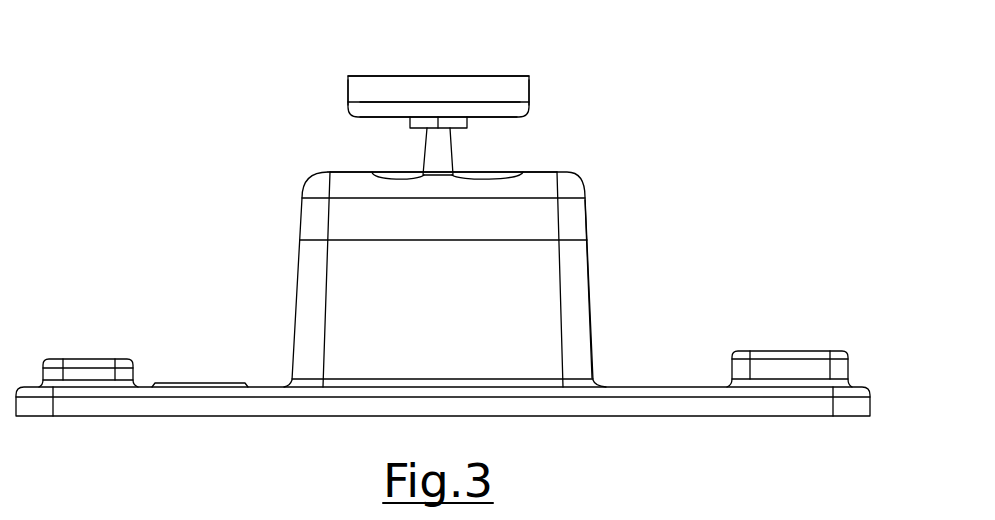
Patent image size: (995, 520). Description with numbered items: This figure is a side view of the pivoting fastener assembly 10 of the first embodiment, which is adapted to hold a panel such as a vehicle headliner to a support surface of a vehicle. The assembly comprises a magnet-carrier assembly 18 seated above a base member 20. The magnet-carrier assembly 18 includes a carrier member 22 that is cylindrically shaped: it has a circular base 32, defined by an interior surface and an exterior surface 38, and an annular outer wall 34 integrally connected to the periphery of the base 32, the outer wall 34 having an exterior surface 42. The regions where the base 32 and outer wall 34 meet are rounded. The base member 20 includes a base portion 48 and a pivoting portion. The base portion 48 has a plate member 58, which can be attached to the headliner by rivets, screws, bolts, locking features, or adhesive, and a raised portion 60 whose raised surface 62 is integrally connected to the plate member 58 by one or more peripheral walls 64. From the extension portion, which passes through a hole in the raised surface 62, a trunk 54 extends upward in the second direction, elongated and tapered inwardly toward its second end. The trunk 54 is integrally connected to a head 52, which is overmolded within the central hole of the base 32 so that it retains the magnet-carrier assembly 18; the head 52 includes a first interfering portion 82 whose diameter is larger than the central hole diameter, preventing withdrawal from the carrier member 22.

The pivoting fastener assembly 10 is at (732, 54).
The magnet-carrier assembly 18 is at (531, 72).
The base member 20 is at (715, 120).
The carrier member 22 is at (418, 85).
The base 32 is at (531, 110).
The outer wall 34 is at (348, 93).
The exterior surface 38 is at (376, 119).
The exterior surface 42 is at (348, 78).
The base portion 48 is at (660, 195).
The head 52 is at (470, 132).
The trunk 54 is at (452, 151).
The plate member 58 is at (630, 387).
The raised portion 60 is at (573, 171).
The raised surface 62 is at (531, 173).
The peripheral walls 64 is at (591, 272).
The first interfering portion 82 is at (428, 133).